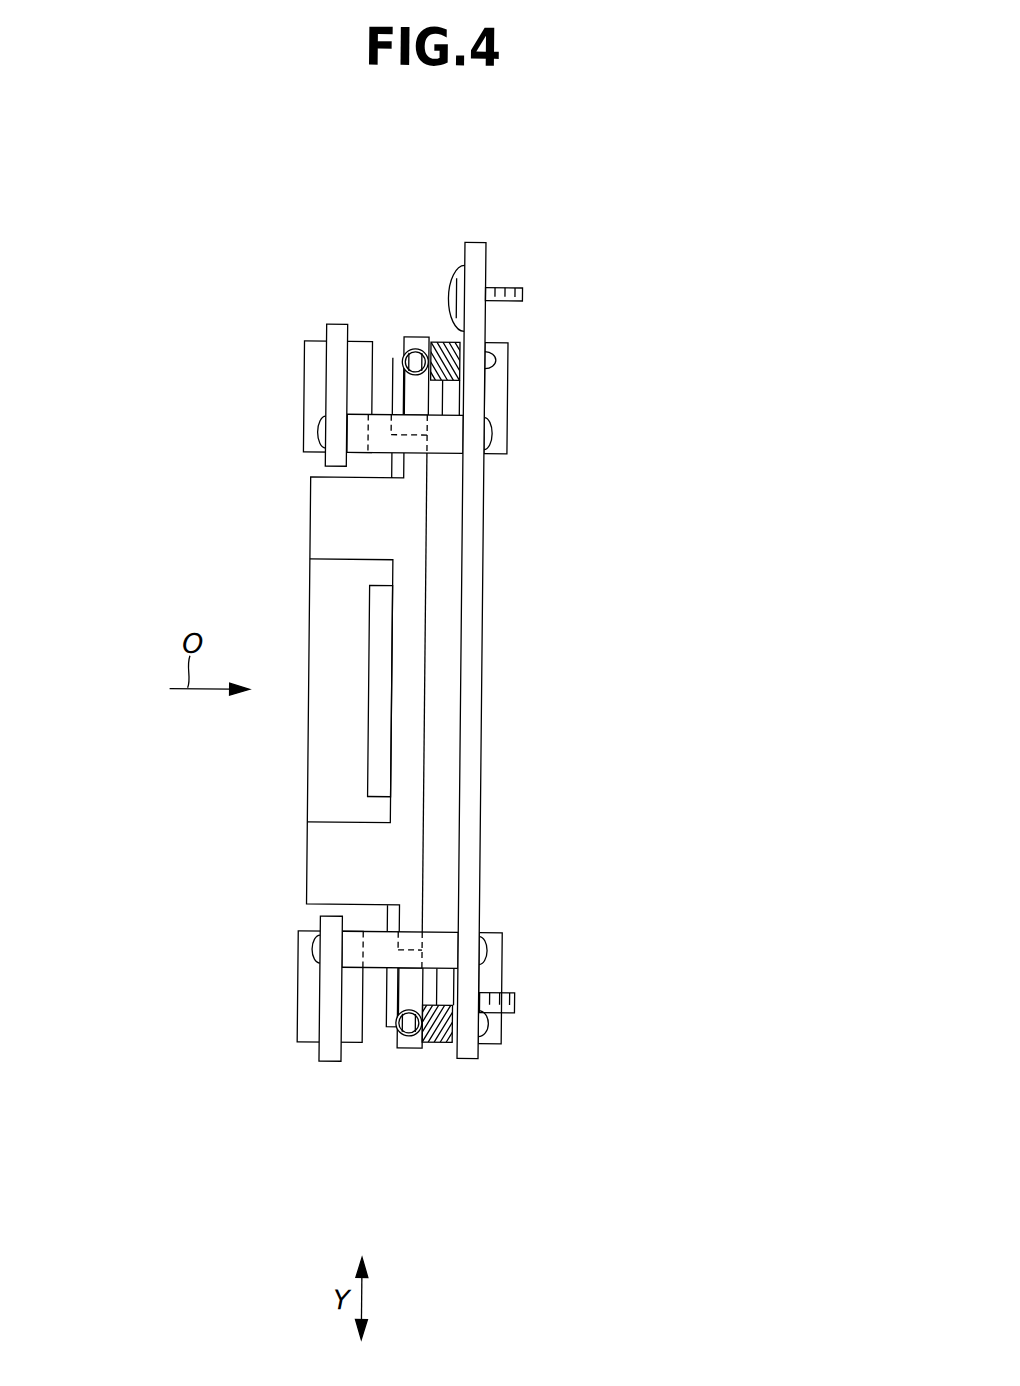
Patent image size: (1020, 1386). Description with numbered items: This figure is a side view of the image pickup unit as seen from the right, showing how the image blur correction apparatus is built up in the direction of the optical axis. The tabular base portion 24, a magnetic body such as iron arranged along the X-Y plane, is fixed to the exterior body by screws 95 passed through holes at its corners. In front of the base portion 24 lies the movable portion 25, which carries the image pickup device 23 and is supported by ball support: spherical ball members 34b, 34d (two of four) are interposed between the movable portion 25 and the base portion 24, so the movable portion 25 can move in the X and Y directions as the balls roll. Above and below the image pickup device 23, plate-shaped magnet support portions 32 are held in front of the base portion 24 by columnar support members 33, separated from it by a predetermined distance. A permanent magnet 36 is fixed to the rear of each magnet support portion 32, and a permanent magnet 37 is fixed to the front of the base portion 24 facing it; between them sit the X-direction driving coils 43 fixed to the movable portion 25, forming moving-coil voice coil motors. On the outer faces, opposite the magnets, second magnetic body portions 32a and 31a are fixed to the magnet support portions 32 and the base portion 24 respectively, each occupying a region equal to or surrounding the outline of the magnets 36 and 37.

The image pickup device 23 is at (369, 626).
The base portion 24 is at (483, 680).
The movable portion 25 is at (307, 512).
The second magnetic body portion 31a is at (505, 419).
The magnet support portion 32 is at (323, 332).
The second magnetic body portion 32a is at (301, 360).
The columnar support member 33 is at (388, 457).
The ball member 34b is at (429, 337).
The ball member 34d is at (423, 1052).
The permanent magnet 36 is at (364, 342).
The permanent magnet 37 is at (451, 393).
The X-direction driving coil 43 is at (387, 361).
The screw 95 is at (447, 292).